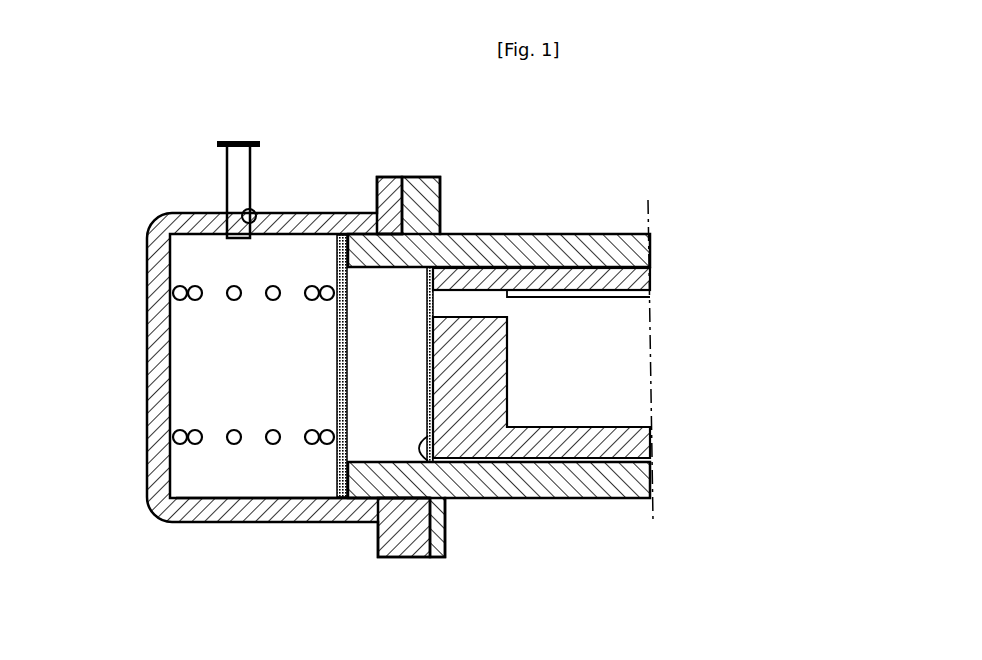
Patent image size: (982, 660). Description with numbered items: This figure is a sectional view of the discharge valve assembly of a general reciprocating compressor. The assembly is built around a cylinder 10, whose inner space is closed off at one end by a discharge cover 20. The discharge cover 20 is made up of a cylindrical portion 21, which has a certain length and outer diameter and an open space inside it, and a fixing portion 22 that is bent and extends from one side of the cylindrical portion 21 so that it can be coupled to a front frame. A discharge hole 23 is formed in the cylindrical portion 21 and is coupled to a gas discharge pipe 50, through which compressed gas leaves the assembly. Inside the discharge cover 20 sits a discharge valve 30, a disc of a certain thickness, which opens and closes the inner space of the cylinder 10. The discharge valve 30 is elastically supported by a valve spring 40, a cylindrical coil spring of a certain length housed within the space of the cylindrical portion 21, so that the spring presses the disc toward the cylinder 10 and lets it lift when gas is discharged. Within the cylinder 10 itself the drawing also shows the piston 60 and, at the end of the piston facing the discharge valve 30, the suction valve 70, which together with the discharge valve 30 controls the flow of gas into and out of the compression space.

The cylinder 10 is at (542, 210).
The discharge cover 20 is at (197, 205).
The cylindrical portion 21 is at (280, 524).
The fixing portion 22 is at (378, 558).
The discharge hole 23 is at (252, 200).
The discharge valve 30 is at (328, 458).
The valve spring 40 is at (228, 432).
The gas discharge pipe 50 is at (247, 163).
The piston 60 is at (567, 468).
The suction valve 70 is at (432, 558).